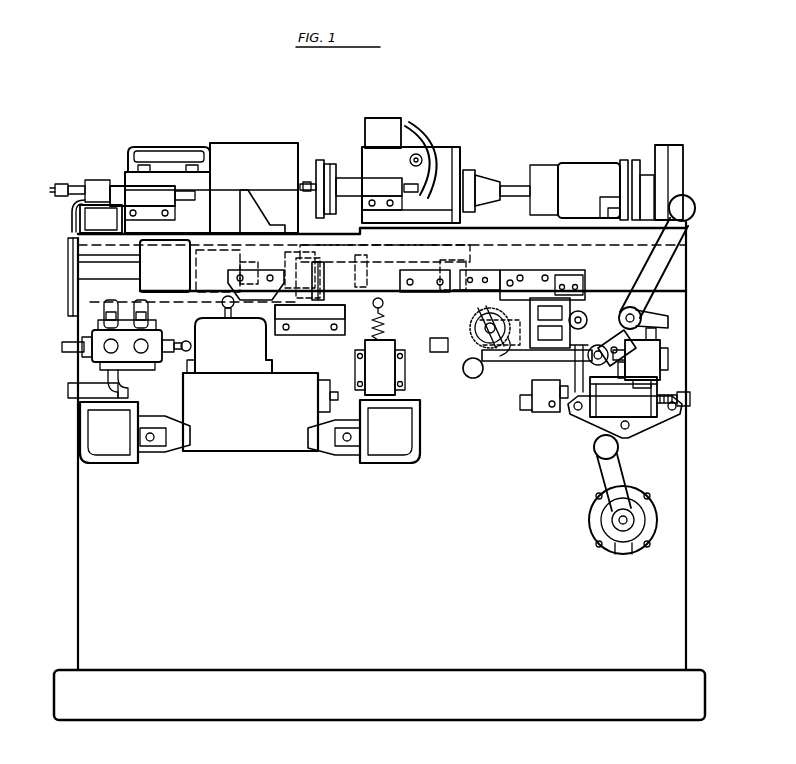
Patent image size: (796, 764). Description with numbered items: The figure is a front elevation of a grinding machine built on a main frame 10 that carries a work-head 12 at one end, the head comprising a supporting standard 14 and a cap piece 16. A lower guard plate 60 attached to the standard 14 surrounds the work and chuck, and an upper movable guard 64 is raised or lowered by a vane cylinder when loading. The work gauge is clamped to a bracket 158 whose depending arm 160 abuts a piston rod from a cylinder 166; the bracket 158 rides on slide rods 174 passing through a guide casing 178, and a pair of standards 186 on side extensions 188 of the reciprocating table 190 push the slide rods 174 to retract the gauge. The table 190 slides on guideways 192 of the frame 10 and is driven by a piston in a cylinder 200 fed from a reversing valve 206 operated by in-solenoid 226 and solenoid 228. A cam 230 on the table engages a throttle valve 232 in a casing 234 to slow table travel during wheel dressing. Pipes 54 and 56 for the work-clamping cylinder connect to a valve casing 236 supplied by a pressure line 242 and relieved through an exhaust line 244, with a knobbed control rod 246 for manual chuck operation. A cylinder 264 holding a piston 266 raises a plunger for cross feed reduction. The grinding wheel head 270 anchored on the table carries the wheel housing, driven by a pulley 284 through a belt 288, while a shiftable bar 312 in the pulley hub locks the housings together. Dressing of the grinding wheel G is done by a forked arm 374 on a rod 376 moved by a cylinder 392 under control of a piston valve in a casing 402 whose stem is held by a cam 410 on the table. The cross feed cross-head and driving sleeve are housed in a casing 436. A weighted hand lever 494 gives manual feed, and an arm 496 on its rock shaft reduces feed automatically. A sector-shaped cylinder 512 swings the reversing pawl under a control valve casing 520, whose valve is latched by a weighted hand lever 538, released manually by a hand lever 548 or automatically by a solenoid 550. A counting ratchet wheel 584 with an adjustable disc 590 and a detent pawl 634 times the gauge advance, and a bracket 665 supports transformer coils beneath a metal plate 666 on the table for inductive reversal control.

The main frame 10 is at (262, 549).
The work-head 12 is at (205, 134).
The supporting standard 14 is at (191, 217).
The cap piece 16 is at (127, 160).
The pipe 54 is at (92, 334).
The pipe 56 is at (148, 326).
The lower guard plate 60 is at (283, 208).
The upper movable guard 64 is at (268, 146).
The bracket 158 is at (90, 181).
The depending arm 160 is at (72, 214).
The cylinder 166 is at (101, 219).
The slide rods 174 is at (192, 200).
The guide casing 178 is at (142, 203).
The standards 186 is at (247, 189).
The side extensions 188 is at (222, 249).
The reciprocating table 190 is at (540, 263).
The guideways 192 is at (72, 276).
The cylinder 200 is at (140, 246).
The reversing valve 206 is at (260, 412).
The in-solenoid 226 is at (152, 454).
The reversing solenoid 228 is at (352, 452).
The cam 230 is at (256, 285).
The throttle valve 232 is at (222, 306).
The casing 234 is at (229, 345).
The valve casing 236 is at (126, 374).
The pressure line 242 is at (66, 390).
The exhaust line 244 is at (60, 348).
The control rod 246 is at (152, 358).
The cylinder 264 is at (656, 360).
The piston 266 is at (660, 332).
The grinding wheel head 270 is at (448, 147).
The pulley 284 is at (477, 170).
The belt 288 is at (476, 212).
The shiftable bar 312 is at (512, 184).
The forked arm 374 is at (323, 160).
The rod 376 is at (411, 193).
The cylinder 392 is at (382, 125).
The casing 402 is at (380, 367).
The cam 410 is at (380, 316).
The casing 436 is at (554, 164).
The weighted hand lever 494 is at (672, 268).
The arm 496 is at (670, 300).
The sector-shaped cylinder 512 is at (668, 146).
The control valve casing 520 is at (629, 407).
The weighted hand lever 538 is at (545, 355).
The hand lever 548 is at (545, 412).
The solenoid 550 is at (581, 326).
The ratchet wheel 584 is at (500, 312).
The disc 590 is at (520, 339).
The detent pawl 634 is at (477, 376).
The bracket 665 is at (283, 336).
The metal plate 666 is at (366, 270).
The grinding wheel G is at (307, 180).